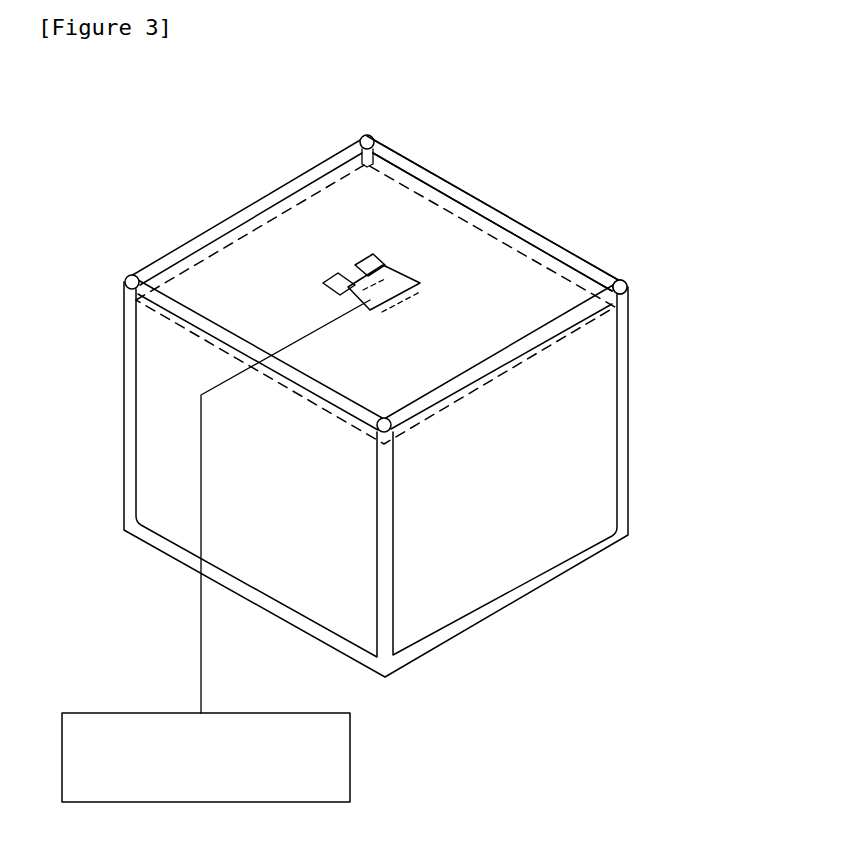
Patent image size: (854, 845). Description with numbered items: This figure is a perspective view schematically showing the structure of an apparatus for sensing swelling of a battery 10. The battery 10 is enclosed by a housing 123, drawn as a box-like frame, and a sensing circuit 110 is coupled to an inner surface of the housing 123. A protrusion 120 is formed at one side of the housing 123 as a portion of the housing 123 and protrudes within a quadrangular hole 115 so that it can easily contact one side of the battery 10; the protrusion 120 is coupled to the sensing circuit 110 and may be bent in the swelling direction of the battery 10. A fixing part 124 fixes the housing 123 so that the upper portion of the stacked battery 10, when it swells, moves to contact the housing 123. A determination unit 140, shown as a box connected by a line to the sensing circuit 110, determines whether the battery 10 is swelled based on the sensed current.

The battery 10 is at (595, 458).
The sensing circuit 110 is at (400, 307).
The quadrangular hole 115 is at (348, 287).
The protrusion 120 is at (378, 273).
The housing 123 is at (543, 245).
The fixing part 124 is at (622, 282).
The determination unit 140 is at (351, 734).